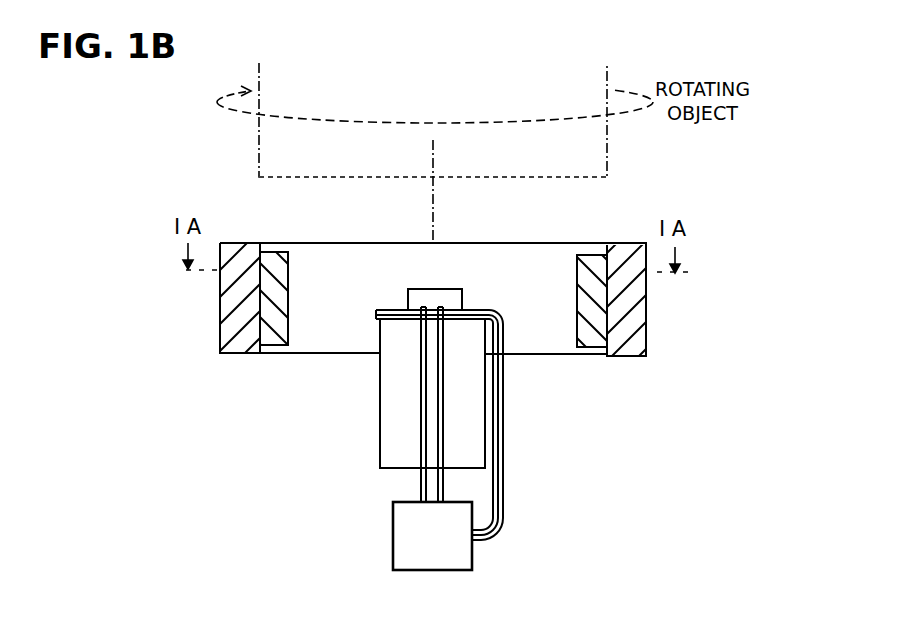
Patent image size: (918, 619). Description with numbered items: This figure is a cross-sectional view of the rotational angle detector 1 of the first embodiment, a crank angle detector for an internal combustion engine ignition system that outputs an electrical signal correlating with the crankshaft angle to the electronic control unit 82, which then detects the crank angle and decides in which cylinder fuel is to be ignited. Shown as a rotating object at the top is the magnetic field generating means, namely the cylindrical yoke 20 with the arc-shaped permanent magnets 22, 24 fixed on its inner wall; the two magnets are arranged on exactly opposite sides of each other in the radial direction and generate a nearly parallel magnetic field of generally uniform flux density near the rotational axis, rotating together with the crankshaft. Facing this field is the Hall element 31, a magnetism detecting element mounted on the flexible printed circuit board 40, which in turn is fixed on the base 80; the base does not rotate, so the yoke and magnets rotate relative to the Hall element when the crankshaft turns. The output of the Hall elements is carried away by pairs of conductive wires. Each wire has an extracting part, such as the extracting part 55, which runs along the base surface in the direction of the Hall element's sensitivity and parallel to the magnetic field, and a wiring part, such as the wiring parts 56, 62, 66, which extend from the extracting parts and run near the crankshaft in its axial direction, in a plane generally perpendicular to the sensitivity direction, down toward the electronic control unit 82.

The rotational angle detector 1 is at (702, 224).
The cylindrical yoke 20 is at (227, 313).
The permanent magnet 22 is at (277, 254).
The permanent magnet 24 is at (595, 263).
The Hall element 31 is at (417, 292).
The flexible printed circuit board 40 is at (497, 312).
The extracting part 55 is at (477, 310).
The wiring part 56 is at (504, 446).
The wiring part 62 is at (444, 394).
The wiring part 66 is at (421, 394).
The base 80 is at (387, 446).
The electronic control unit 82 is at (393, 538).